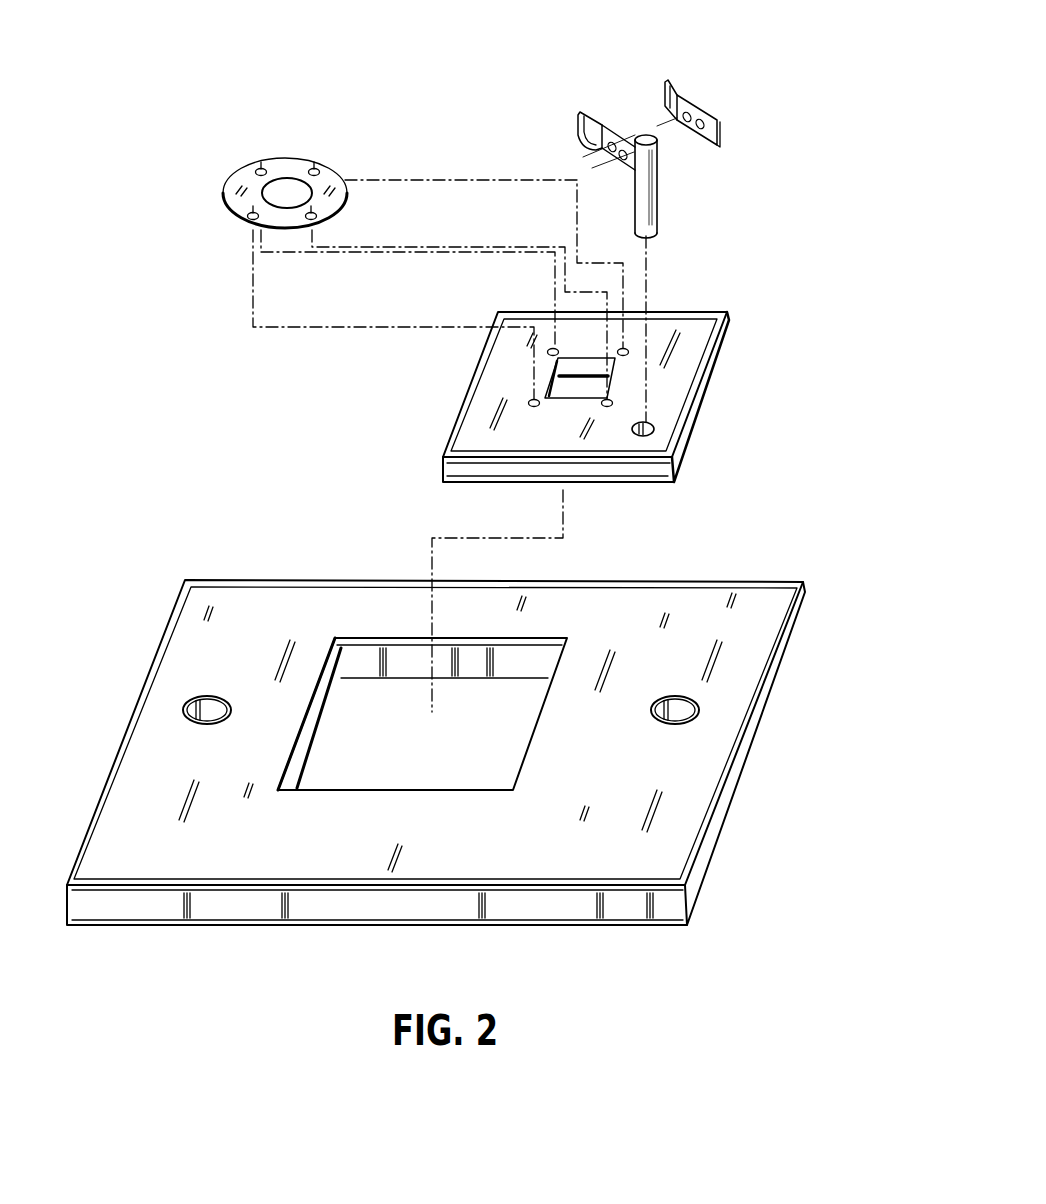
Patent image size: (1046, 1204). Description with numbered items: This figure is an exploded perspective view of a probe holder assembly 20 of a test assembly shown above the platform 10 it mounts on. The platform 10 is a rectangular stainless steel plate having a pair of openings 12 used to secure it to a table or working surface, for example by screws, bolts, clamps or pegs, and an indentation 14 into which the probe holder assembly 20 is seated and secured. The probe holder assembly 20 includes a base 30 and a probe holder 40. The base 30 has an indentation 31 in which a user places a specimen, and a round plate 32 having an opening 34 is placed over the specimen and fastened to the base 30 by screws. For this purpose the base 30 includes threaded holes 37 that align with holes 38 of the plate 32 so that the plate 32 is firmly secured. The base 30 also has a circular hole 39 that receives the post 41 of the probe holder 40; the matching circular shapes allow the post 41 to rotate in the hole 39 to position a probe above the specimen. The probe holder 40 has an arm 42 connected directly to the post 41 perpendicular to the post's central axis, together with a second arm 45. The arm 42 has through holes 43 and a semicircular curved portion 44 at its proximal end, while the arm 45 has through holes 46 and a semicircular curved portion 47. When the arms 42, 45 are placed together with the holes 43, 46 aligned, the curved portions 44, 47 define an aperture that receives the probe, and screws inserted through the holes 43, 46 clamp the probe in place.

The platform 10 is at (805, 627).
The openings 12 is at (195, 703).
The indentation 14 is at (375, 770).
The probe holder assembly 20 is at (530, 280).
The base 30 is at (620, 408).
The indentation 31 is at (588, 383).
The round plate 32 is at (305, 159).
The opening 34 is at (280, 192).
The holes 37 is at (610, 406).
The holes 38 is at (323, 215).
The hole 39 is at (655, 428).
The probe holder 40 is at (678, 145).
The post 41 is at (658, 212).
The arm 42 is at (599, 121).
The through holes 43 is at (622, 159).
The semi circular curved portion 44 is at (590, 120).
The arm 45 is at (732, 89).
The through holes 46 is at (705, 118).
The semi circular curved portion 47 is at (677, 82).